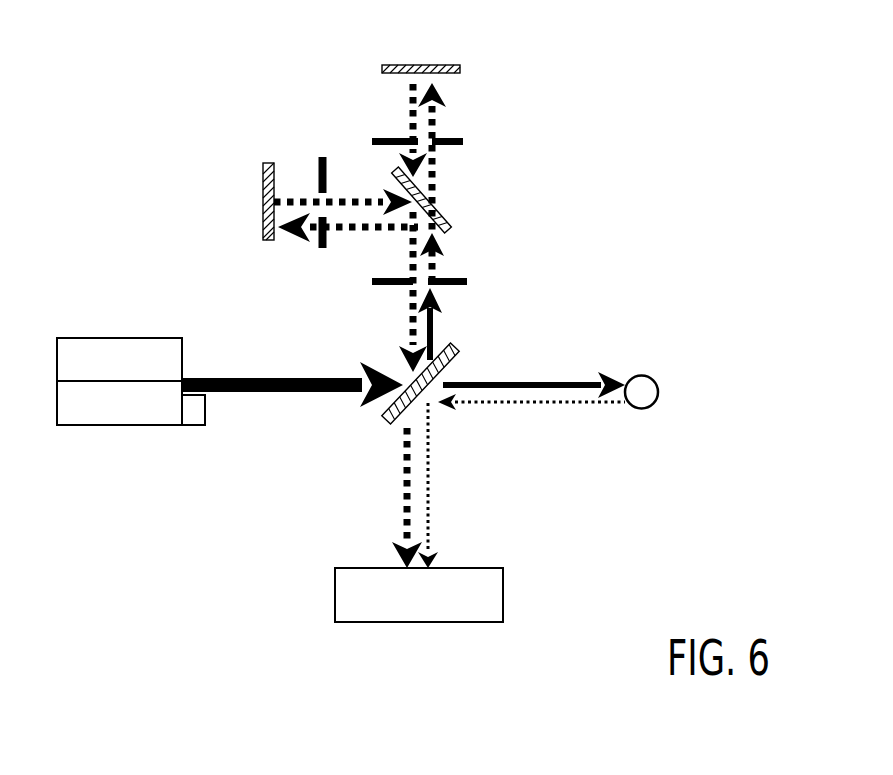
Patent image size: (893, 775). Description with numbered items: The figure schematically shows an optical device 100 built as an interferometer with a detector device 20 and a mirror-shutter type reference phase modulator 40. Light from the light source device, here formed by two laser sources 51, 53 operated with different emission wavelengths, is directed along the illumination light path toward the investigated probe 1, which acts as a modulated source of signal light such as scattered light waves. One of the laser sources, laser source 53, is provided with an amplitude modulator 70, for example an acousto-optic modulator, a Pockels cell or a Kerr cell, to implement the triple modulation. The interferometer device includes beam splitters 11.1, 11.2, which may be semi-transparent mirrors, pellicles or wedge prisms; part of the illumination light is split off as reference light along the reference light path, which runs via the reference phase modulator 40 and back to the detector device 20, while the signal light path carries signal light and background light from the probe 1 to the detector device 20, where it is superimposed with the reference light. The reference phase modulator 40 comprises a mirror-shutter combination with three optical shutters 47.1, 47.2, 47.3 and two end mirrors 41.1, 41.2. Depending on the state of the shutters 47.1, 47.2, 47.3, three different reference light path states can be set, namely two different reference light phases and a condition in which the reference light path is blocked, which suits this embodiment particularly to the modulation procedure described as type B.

The optical device 100 is at (128, 198).
The probe 1 is at (640, 410).
The detector device 20 is at (485, 613).
The reference phase modulator 40 is at (535, 221).
The beam splitter 11.1 is at (453, 344).
The beam splitter 11.2 is at (445, 230).
The end mirror 41.1 is at (268, 162).
The end mirror 41.2 is at (380, 67).
The optical shutter 47.1 is at (372, 285).
The optical shutter 47.2 is at (320, 248).
The optical shutter 47.3 is at (463, 141).
The laser source 51 is at (165, 376).
The laser source 53 is at (165, 420).
The amplitude modulator 70 is at (195, 417).